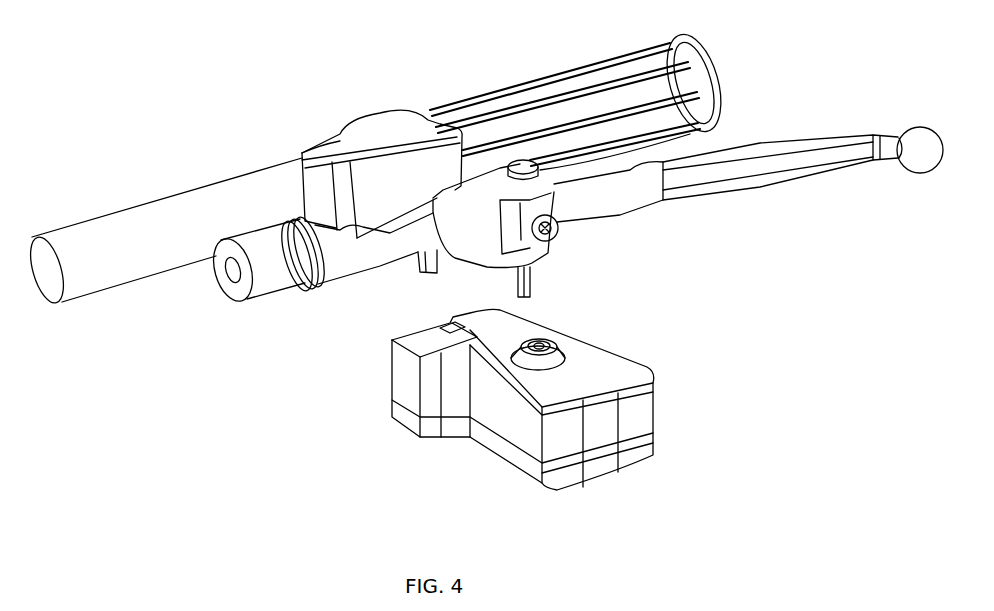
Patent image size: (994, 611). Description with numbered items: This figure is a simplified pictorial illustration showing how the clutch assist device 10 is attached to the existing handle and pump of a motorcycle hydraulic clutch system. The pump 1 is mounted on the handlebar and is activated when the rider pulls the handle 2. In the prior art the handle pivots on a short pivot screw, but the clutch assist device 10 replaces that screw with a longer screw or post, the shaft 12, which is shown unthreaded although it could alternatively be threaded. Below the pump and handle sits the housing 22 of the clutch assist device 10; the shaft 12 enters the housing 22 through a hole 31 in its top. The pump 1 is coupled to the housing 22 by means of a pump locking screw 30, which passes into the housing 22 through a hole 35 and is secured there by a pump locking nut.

The pump 1 is at (343, 145).
The handle 2 is at (777, 165).
The clutch assist device 10 is at (667, 387).
The shaft 12 is at (533, 278).
The housing 22 is at (603, 470).
The pump locking screw 30 is at (425, 269).
The hole 31 is at (543, 343).
The hole 35 is at (440, 338).